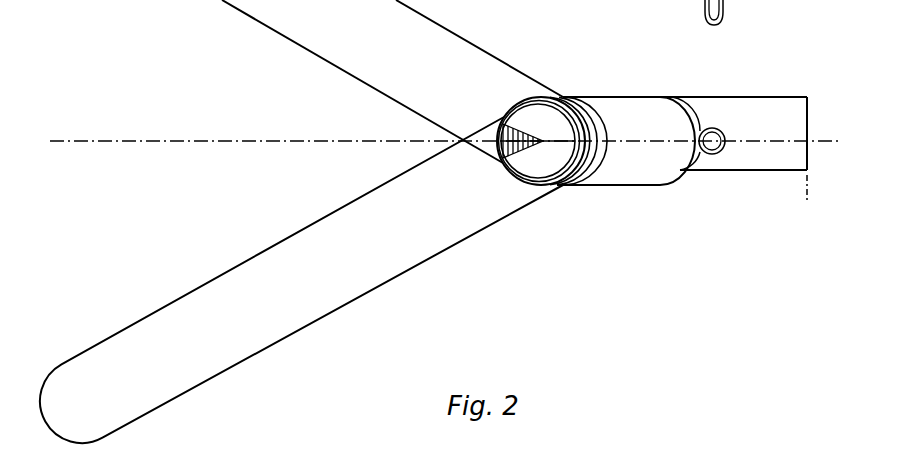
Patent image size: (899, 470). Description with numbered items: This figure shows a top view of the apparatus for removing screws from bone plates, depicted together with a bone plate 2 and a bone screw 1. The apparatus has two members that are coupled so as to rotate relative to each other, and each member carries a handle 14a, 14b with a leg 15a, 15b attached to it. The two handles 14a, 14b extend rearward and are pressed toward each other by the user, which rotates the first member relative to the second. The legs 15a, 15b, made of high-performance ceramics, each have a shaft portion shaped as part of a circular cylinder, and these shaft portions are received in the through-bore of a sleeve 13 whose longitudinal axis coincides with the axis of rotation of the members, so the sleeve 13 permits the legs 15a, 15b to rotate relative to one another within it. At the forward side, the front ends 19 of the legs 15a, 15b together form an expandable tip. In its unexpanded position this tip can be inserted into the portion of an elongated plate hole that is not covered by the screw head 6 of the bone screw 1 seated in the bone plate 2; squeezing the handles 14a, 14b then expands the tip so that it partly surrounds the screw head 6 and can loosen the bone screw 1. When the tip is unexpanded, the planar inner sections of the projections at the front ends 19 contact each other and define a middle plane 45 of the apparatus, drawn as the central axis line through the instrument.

The bone screw 1 is at (717, 162).
The bone plate 2 is at (770, 122).
The screw head 6 is at (715, 127).
The sleeve 13 is at (637, 172).
The handle 14a is at (295, 22).
The handle 14b is at (322, 263).
The leg 15a is at (550, 132).
The leg 15b is at (550, 160).
The front end 19 is at (676, 12).
The middle plane 45 is at (208, 139).